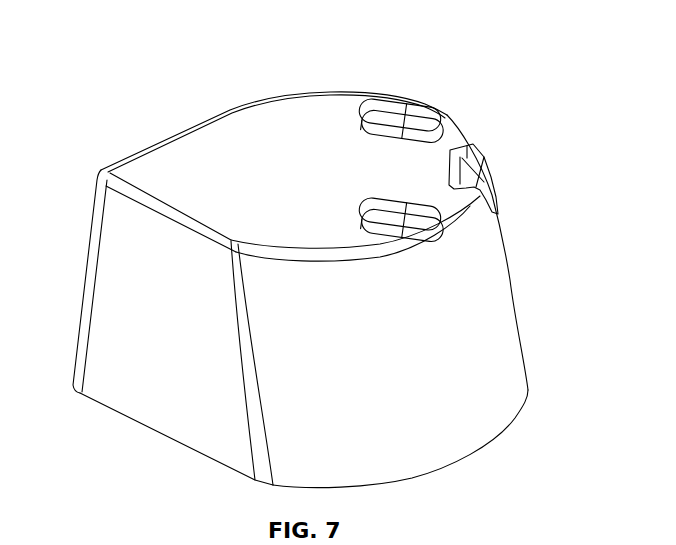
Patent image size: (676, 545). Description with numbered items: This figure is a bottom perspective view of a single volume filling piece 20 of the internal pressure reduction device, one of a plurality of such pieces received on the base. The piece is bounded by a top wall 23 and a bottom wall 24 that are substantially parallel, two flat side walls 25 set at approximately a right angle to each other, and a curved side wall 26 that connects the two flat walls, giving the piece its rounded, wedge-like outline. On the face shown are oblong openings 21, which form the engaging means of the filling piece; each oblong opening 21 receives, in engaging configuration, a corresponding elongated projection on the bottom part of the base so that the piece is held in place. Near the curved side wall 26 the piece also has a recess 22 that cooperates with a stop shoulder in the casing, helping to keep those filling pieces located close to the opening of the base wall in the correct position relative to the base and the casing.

The volume filling piece 20 is at (547, 410).
The oblong opening 21 is at (423, 108).
The recess 22 is at (484, 182).
The top wall 23 is at (412, 478).
The bottom wall 24 is at (318, 99).
The flat side wall 25 is at (125, 280).
The curved side wall 26 is at (498, 327).